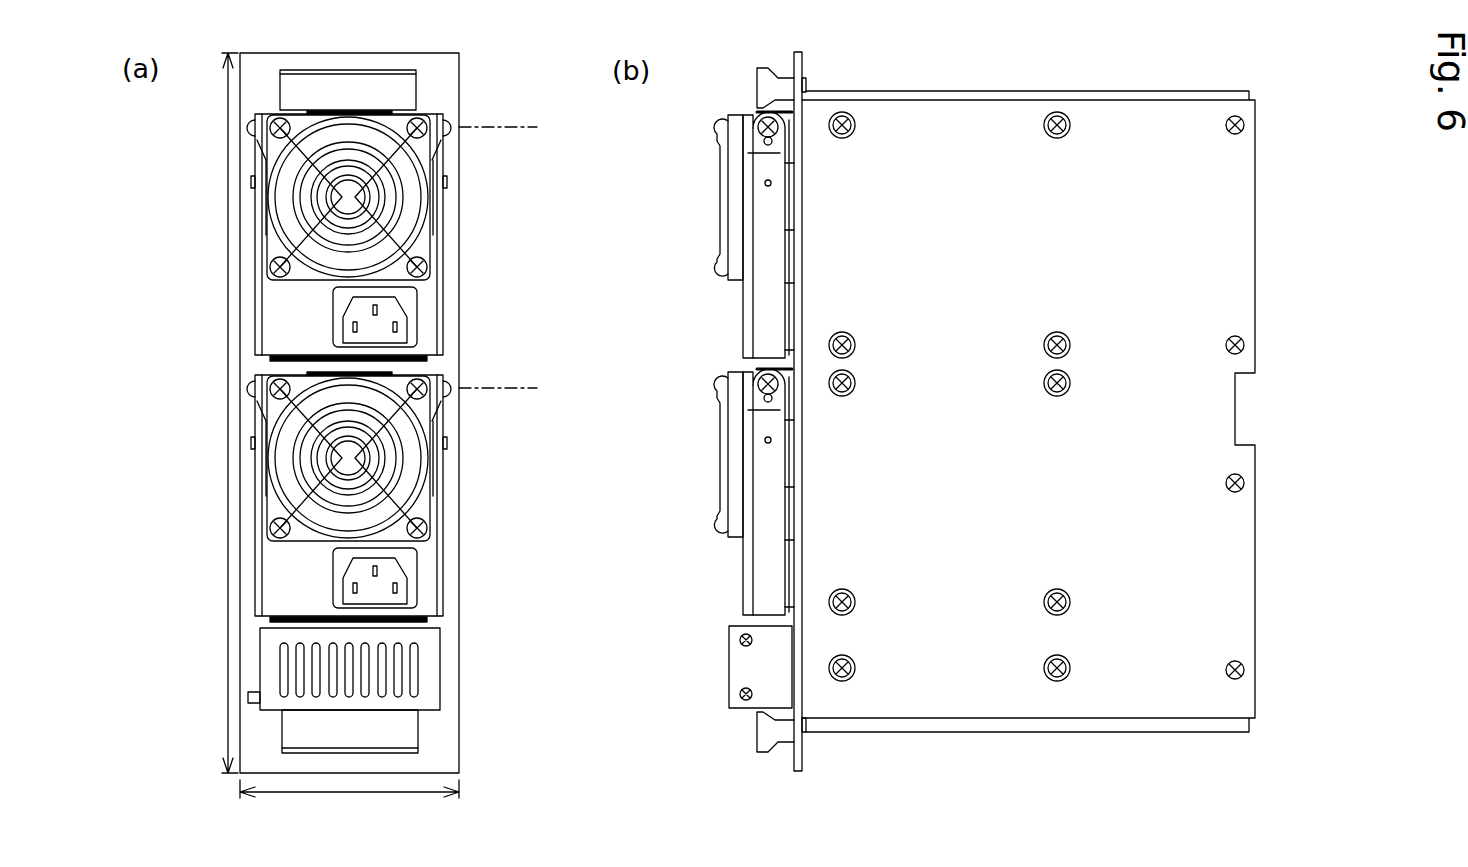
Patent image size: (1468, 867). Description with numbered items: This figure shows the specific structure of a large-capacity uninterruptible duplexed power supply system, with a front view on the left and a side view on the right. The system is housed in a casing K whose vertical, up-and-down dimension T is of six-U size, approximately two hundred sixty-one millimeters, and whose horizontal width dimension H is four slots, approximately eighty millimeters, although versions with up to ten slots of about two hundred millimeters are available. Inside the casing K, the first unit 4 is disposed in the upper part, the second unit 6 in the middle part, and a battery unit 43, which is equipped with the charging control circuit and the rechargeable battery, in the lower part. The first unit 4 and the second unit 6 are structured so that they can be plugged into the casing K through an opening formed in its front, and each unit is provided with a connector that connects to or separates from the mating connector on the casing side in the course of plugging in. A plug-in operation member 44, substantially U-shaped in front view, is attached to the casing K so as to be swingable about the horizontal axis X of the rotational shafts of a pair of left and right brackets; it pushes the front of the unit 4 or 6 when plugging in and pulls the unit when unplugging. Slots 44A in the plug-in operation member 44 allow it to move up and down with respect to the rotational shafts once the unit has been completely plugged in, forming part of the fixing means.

The first unit 4 is at (425, 310).
The second unit 6 is at (425, 568).
The battery unit 43 is at (440, 672).
The plug-in operation member 44 is at (443, 252).
The slots 44A is at (765, 137).
The casing K is at (459, 73).
The vertical dimension T is at (228, 325).
The horizontal dimension H is at (350, 793).
The horizontal axis X is at (513, 127).